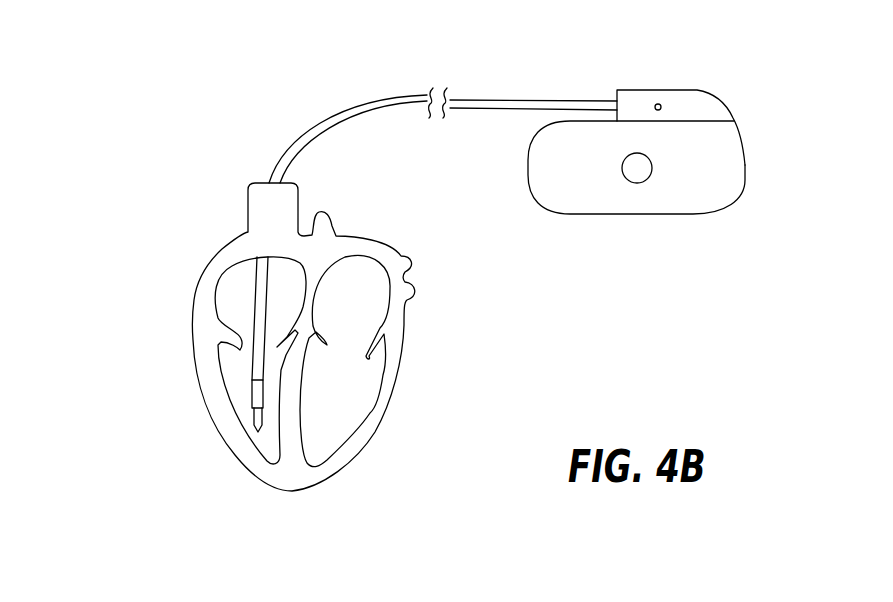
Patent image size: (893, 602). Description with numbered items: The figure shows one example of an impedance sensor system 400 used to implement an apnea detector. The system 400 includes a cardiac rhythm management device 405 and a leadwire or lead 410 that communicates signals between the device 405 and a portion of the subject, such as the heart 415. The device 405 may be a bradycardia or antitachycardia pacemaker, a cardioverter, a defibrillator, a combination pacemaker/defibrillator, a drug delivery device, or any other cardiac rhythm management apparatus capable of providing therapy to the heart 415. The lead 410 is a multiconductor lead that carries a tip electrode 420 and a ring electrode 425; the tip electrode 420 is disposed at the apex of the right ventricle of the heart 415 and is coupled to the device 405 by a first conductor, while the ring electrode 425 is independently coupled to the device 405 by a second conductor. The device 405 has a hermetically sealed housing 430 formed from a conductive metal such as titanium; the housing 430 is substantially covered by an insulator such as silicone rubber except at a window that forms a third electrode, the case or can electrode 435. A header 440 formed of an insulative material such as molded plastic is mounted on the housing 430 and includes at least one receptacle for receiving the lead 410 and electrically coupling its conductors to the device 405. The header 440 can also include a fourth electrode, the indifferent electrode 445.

The impedance sensor system 400 is at (597, 353).
The cardiac rhythm management device 405 is at (698, 50).
The lead 410 is at (307, 130).
The heart 415 is at (366, 446).
The tip electrode 420 is at (257, 435).
The ring electrode 425 is at (251, 398).
The housing 430 is at (747, 150).
The can electrode 435 is at (653, 169).
The header 440 is at (706, 93).
The indifferent electrode 445 is at (658, 104).